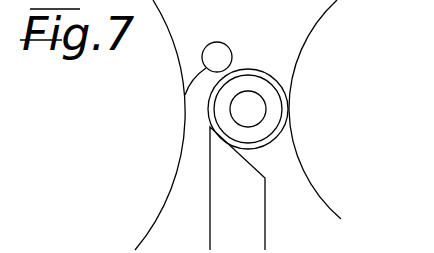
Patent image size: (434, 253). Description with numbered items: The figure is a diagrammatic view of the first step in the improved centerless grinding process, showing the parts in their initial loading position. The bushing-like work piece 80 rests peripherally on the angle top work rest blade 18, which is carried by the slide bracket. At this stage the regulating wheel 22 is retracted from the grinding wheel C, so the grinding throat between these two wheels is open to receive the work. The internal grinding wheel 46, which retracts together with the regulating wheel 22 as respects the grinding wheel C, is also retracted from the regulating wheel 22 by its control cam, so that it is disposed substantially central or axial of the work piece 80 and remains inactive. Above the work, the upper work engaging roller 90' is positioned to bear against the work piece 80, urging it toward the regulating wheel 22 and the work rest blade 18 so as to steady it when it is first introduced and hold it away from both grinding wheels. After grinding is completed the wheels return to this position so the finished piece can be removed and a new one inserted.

The regulating wheel 22 is at (331, 33).
The grinding wheel C is at (180, 67).
The upper work engaging roller 90' is at (158, 100).
The work piece 80 is at (280, 130).
The internal grinding wheel 46 is at (258, 110).
The work rest blade 18 is at (223, 155).